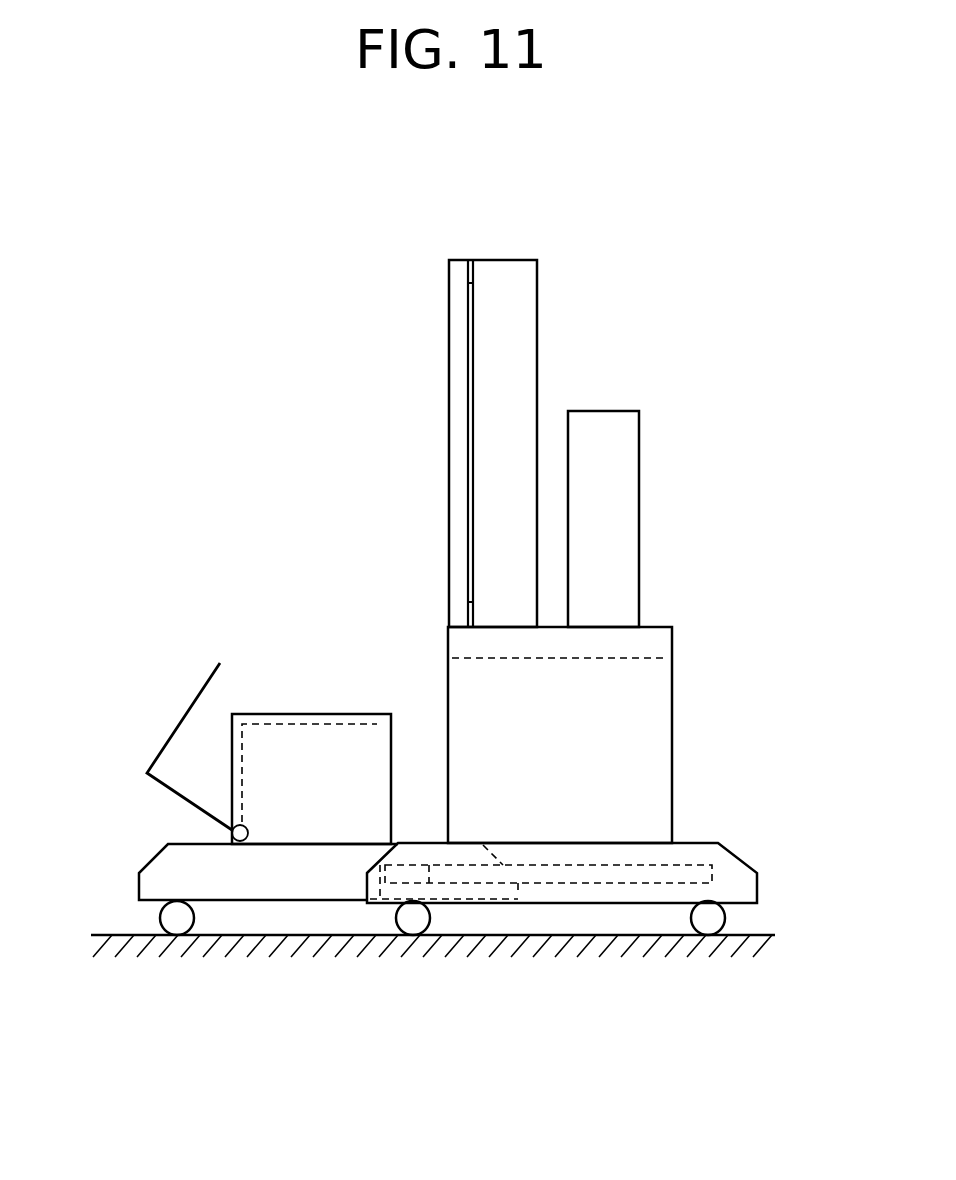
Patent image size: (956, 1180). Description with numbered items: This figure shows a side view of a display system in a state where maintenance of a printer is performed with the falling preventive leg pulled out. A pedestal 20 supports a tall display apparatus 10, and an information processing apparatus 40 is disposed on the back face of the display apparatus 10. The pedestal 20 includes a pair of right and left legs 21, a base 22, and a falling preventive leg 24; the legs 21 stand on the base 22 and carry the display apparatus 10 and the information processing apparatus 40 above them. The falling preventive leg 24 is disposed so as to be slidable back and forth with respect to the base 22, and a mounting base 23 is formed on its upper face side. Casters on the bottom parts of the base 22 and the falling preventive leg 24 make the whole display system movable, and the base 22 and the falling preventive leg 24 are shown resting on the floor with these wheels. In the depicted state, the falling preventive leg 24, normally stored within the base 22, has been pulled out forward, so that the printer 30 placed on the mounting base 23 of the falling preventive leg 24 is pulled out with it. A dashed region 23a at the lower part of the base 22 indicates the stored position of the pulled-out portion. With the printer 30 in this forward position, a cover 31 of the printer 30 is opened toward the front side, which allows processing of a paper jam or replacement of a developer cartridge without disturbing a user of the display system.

The display apparatus 10 is at (440, 246).
The pedestal 20 is at (757, 738).
The legs 21 is at (673, 680).
The base 22 is at (756, 887).
The mounting base 23 is at (198, 842).
The hinge receiving portion 23a is at (377, 883).
The falling preventive leg 24 is at (136, 863).
The printer 30 is at (362, 713).
The cover 31 is at (172, 727).
The information processing apparatus 40 is at (609, 410).